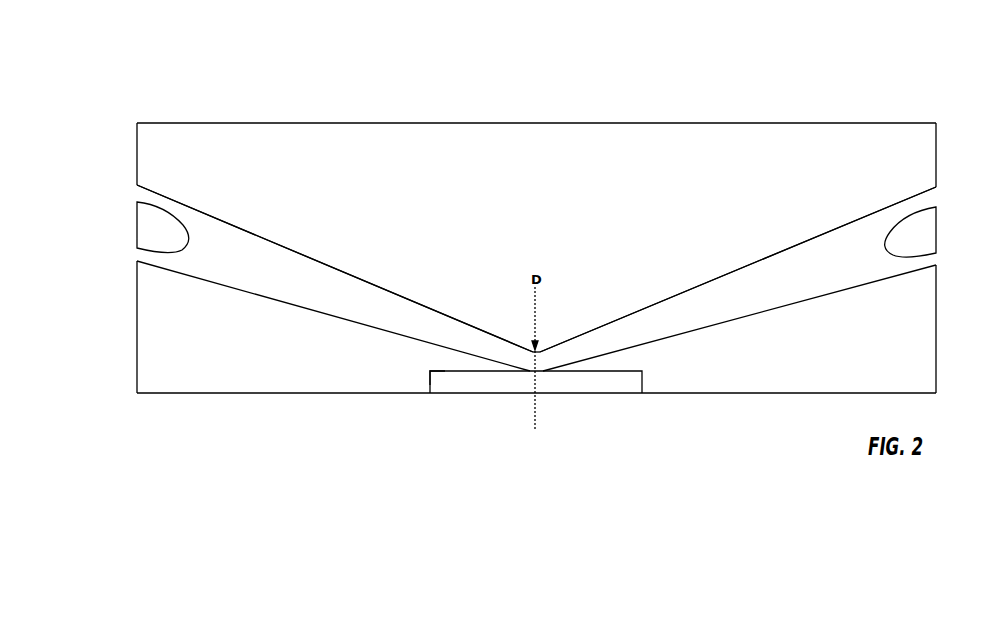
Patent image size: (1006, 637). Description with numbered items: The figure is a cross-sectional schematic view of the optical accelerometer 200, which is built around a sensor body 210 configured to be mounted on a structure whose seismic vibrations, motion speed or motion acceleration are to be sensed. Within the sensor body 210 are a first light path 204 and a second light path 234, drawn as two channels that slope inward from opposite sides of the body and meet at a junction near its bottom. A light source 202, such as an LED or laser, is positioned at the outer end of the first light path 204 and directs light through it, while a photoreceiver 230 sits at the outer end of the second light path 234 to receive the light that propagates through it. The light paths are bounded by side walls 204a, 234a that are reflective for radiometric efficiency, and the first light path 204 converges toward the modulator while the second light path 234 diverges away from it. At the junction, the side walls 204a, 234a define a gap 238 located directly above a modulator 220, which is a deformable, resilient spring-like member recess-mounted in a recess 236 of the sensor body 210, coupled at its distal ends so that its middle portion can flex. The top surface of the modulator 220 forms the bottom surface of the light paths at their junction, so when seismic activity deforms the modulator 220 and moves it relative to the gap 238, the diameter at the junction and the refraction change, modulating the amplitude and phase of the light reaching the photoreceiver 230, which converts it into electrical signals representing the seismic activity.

The optical accelerometer 200 is at (902, 101).
The sensor body 210 is at (357, 150).
The light source 202 is at (138, 210).
The photoreceiver 230 is at (942, 211).
The first light path 204 is at (347, 305).
The side wall of first light path 204a is at (258, 233).
The second light path 234 is at (707, 293).
The side wall of second light path 234a is at (810, 238).
The modulator 220 is at (594, 387).
The recess 236 is at (432, 372).
The gap 238 is at (535, 377).